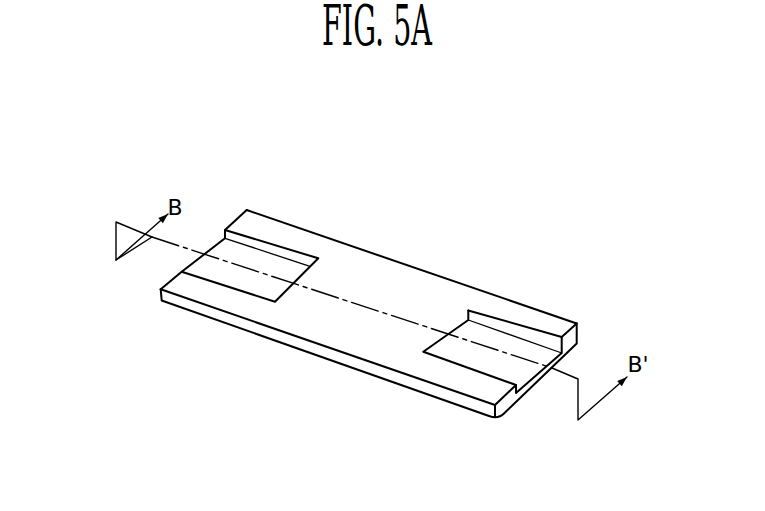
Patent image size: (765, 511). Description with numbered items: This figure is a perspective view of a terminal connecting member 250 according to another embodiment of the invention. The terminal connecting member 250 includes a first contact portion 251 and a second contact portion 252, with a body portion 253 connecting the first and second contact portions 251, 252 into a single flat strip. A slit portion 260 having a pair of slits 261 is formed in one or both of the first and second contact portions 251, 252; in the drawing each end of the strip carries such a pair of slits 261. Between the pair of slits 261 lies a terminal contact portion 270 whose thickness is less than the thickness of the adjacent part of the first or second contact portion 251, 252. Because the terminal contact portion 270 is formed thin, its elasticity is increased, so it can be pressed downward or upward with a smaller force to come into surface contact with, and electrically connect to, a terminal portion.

The terminal connecting member 250 is at (492, 197).
The first contact portion 251 is at (206, 326).
The second contact portion 252 is at (437, 398).
The body portion 253 is at (343, 331).
The slit portion 260 is at (202, 145).
The slits 261 is at (222, 281).
The terminal contact portion 270 is at (181, 271).